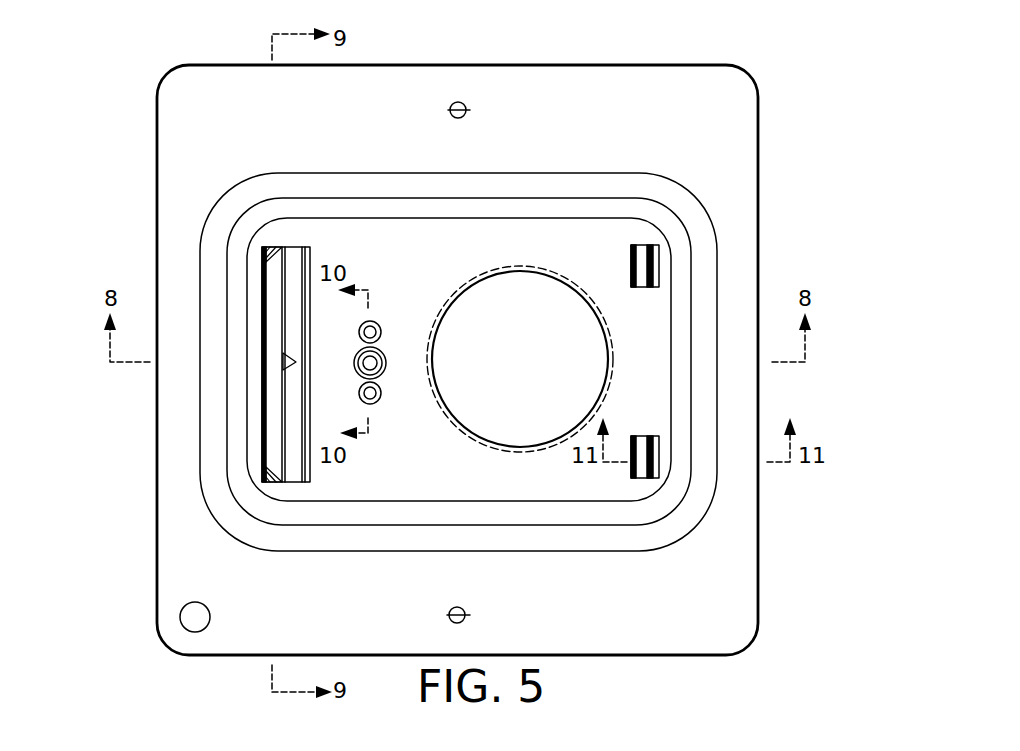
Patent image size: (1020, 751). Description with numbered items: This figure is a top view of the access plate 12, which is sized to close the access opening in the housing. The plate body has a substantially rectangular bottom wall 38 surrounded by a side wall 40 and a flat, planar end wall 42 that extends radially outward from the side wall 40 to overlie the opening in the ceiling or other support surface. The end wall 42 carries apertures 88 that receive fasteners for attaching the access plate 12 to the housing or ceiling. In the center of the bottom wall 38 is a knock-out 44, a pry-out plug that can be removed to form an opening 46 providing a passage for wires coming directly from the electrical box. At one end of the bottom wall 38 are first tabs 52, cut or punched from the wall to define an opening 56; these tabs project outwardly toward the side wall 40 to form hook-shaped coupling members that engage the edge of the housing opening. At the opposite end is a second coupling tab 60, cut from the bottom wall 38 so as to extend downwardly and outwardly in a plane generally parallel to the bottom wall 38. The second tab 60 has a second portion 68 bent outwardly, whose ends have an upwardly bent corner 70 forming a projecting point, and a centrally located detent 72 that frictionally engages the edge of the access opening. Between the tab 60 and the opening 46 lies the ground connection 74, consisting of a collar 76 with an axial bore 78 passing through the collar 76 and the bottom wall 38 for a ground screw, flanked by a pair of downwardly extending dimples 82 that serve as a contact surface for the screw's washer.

The access plate 12 is at (131, 114).
The bottom wall 38 is at (573, 245).
The side wall 40 is at (535, 537).
The end wall 42 is at (715, 605).
The knock-out 44 is at (612, 352).
The opening 46 is at (527, 272).
The first tabs 52 is at (648, 270).
The opening 56 is at (654, 252).
The second coupling tab 60 is at (256, 296).
The second portion 68 is at (263, 425).
The upwardly bent corner 70 is at (276, 246).
The detent 72 is at (290, 372).
The ground connection 74 is at (408, 363).
The collar 76 is at (383, 372).
The axial bore 78 is at (384, 348).
The dimples 82 is at (378, 333).
The apertures 88 is at (466, 103).